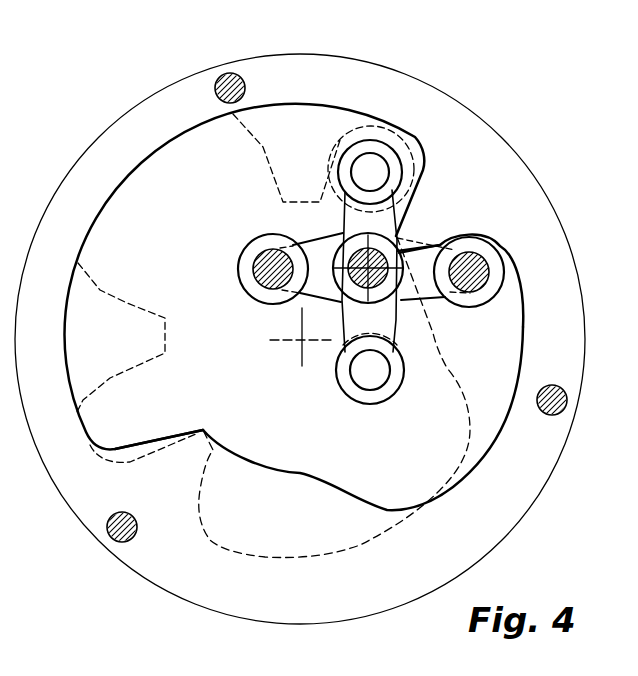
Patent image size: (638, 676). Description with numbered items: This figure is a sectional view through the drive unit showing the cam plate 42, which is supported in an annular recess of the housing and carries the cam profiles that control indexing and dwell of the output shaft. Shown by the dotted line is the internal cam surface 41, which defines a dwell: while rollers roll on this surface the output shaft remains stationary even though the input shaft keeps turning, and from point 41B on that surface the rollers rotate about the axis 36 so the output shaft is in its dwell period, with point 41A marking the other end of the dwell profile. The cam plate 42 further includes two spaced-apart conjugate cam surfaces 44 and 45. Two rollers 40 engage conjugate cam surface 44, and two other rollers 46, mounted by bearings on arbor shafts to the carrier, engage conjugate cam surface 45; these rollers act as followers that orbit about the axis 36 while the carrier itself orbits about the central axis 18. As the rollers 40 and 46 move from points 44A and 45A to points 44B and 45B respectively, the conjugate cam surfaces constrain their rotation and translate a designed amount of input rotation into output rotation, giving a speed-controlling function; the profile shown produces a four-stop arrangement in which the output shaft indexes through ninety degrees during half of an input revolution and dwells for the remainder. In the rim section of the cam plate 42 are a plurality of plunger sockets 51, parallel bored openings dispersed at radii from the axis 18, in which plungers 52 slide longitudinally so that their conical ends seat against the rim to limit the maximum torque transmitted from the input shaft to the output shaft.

The axis 18 is at (300, 337).
The axis 36 is at (379, 278).
The rollers 40 is at (397, 146).
The internal cam surface 41 is at (268, 163).
The point on cam surface 41A is at (336, 160).
The point on cam surface 41B is at (128, 368).
The cam plate 42 is at (300, 339).
The conjugate cam surface 44 is at (433, 347).
The point on cam surface 44A is at (403, 185).
The point on cam surface 44B is at (208, 485).
The conjugate cam surface 45 is at (520, 328).
The point on cam surface 45A is at (462, 235).
The point on cam surface 45B is at (154, 436).
The rollers 46 is at (238, 268).
The plunger sockets 51 is at (216, 84).
The plungers 52 is at (232, 75).